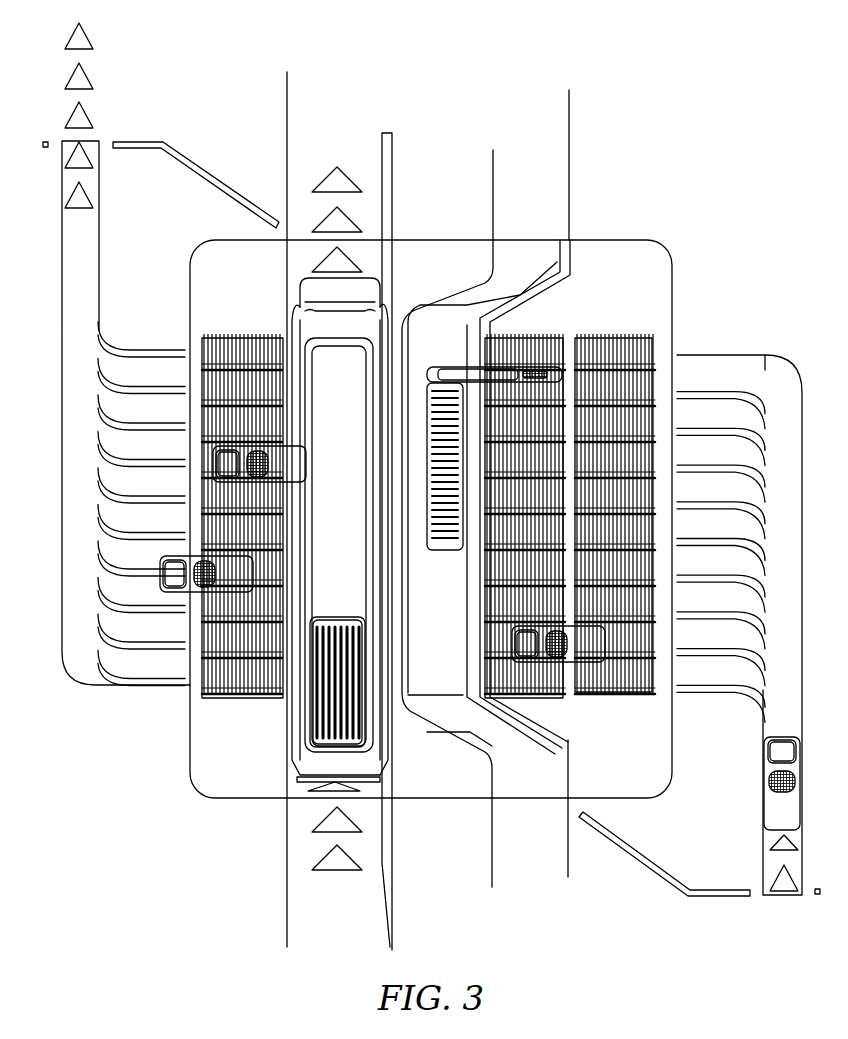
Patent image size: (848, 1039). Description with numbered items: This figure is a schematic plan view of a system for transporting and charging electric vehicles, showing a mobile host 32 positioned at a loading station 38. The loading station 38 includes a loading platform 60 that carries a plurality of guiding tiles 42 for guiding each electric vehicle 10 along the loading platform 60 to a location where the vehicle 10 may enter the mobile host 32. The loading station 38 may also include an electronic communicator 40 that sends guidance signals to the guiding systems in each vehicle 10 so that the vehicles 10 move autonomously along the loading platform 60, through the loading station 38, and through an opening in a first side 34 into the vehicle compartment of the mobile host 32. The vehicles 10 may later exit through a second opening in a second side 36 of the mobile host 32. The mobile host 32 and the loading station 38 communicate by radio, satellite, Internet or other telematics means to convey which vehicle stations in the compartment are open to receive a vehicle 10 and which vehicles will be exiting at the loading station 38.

The electric vehicle 10 is at (187, 593).
The mobile host 32 is at (303, 320).
The first side 34 is at (393, 310).
The second side 36 is at (290, 320).
The loading station 38 is at (430, 305).
The electronic communicator 40 is at (468, 373).
The guiding tiles 42 is at (205, 475).
The loading platform 60 is at (543, 340).